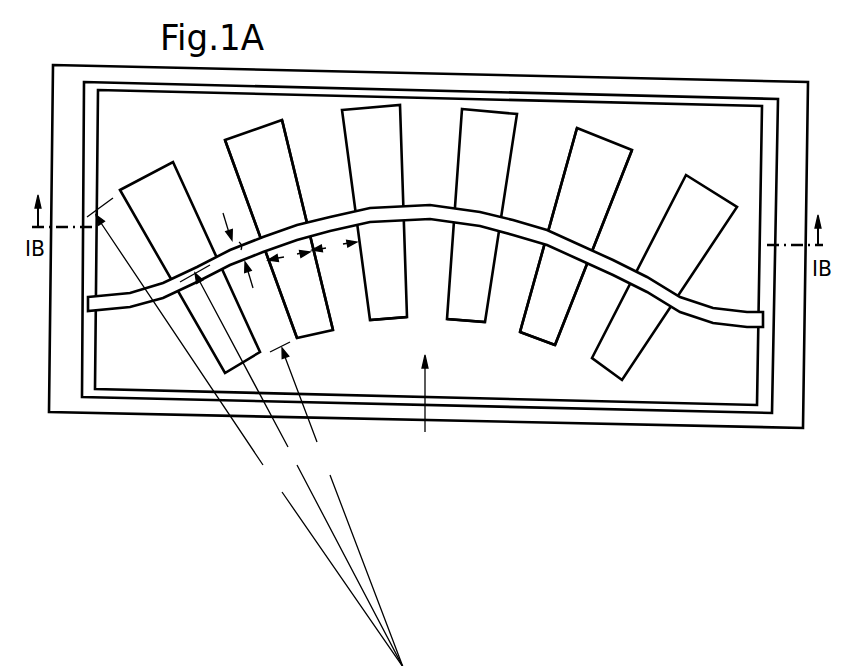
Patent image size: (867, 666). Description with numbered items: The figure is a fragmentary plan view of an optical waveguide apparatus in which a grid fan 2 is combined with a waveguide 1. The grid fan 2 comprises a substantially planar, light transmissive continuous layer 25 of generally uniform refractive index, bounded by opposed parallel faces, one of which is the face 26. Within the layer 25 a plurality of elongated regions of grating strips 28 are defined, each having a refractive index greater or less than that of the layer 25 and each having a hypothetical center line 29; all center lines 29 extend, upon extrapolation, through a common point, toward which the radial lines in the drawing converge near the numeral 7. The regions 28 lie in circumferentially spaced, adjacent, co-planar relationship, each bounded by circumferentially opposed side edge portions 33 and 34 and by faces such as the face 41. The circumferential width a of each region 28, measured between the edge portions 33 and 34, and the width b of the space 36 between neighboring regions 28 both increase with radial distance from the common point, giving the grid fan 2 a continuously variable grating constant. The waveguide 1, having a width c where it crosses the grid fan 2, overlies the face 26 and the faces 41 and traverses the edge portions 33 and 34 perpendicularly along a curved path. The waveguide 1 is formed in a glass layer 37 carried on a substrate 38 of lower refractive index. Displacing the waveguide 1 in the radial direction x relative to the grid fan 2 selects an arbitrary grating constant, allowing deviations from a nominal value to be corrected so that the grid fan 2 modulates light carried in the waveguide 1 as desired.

The waveguide 1 is at (426, 217).
The grid fan 2 is at (428, 217).
The center of curvature 7 is at (437, 662).
The light transmissive continuous layer 25 is at (487, 400).
The face 26 is at (693, 385).
The region of grating strip 28 is at (385, 298).
The center line 29 is at (270, 413).
The side edge portion 33 is at (233, 167).
The side edge portion 34 is at (292, 152).
The space 36 is at (503, 318).
The layer of glass 37 is at (588, 412).
The substrate 38 is at (720, 420).
The face 41 is at (601, 192).
The radial direction x is at (425, 409).
The circumferential width of region a is at (289, 257).
The circumferential width of space b is at (334, 250).
The width of waveguide c is at (238, 250).